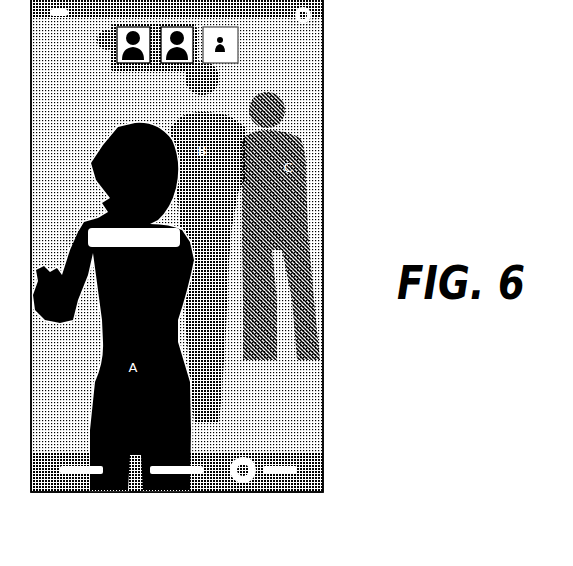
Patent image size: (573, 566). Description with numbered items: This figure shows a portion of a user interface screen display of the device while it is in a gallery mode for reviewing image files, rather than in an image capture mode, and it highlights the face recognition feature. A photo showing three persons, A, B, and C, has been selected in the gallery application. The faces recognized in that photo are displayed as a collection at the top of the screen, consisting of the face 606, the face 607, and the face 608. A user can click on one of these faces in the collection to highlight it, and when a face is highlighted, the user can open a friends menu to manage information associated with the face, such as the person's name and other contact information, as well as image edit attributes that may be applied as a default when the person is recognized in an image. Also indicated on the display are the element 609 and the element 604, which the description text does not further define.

The camera control toolbar with capture button 604 is at (267, 492).
The face in the collection of faces 606 is at (123, 75).
The face in the collection of faces 607 is at (168, 70).
The face in the collection of faces 608 is at (241, 43).
The identified person name label 609 is at (128, 250).